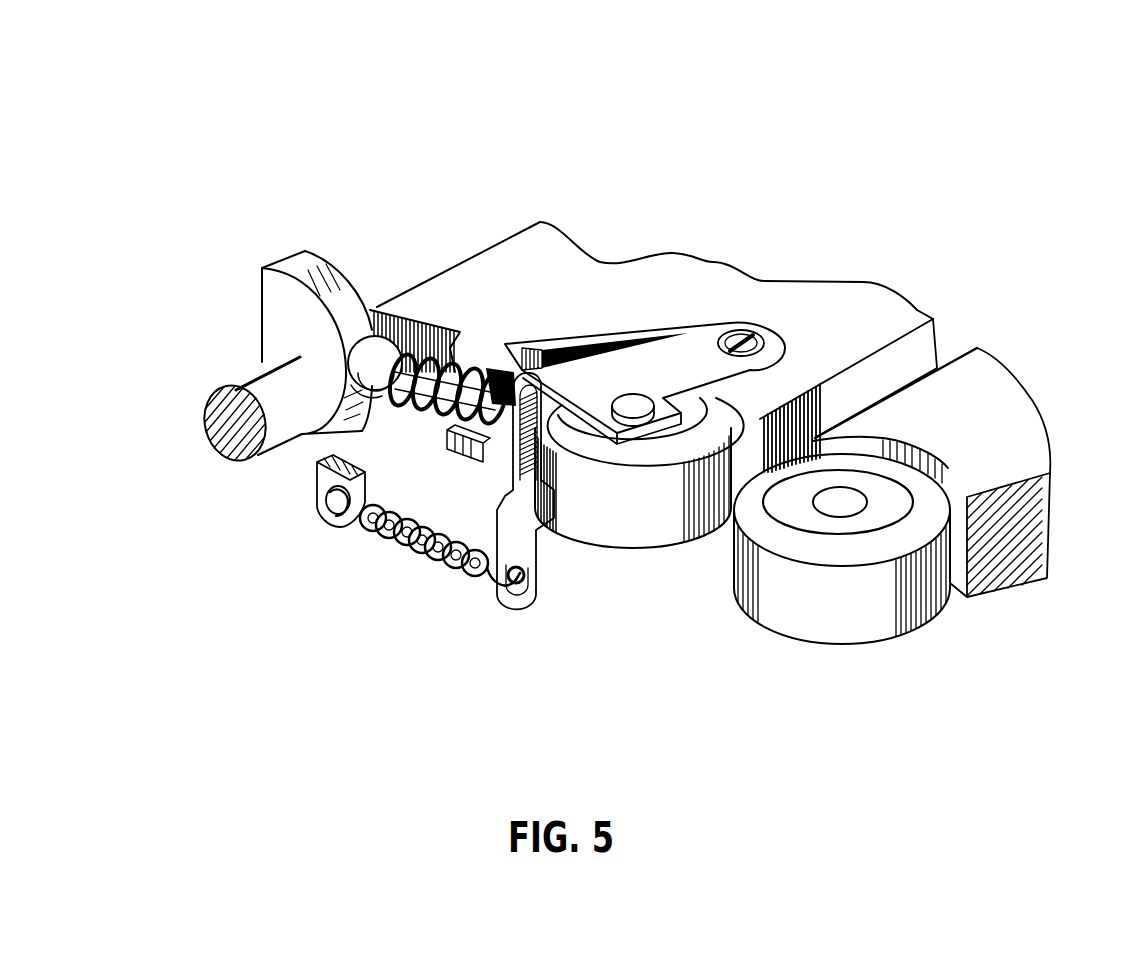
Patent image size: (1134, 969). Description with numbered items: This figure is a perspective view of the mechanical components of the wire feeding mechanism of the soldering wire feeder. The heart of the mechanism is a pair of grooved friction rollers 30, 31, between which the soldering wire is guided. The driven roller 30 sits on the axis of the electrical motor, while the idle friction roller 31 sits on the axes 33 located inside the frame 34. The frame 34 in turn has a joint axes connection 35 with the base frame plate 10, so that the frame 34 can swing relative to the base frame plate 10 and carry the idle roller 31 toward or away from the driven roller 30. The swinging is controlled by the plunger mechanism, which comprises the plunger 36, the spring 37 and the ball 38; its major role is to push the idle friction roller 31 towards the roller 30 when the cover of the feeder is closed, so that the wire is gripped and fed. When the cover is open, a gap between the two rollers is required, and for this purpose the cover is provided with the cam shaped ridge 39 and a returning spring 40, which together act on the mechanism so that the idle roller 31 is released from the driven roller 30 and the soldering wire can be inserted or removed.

The base frame plate 10 is at (900, 321).
The grooved friction roller 30 is at (877, 590).
The idle friction roller 31 is at (658, 525).
The axes 33 is at (633, 397).
The frame 34 is at (700, 350).
The joint axes connection 35 is at (765, 335).
The plunger 36 is at (475, 370).
The spring 37 is at (425, 355).
The ball 38 is at (373, 337).
The cam shaped ridge 39 is at (283, 318).
The returning spring 40 is at (383, 545).